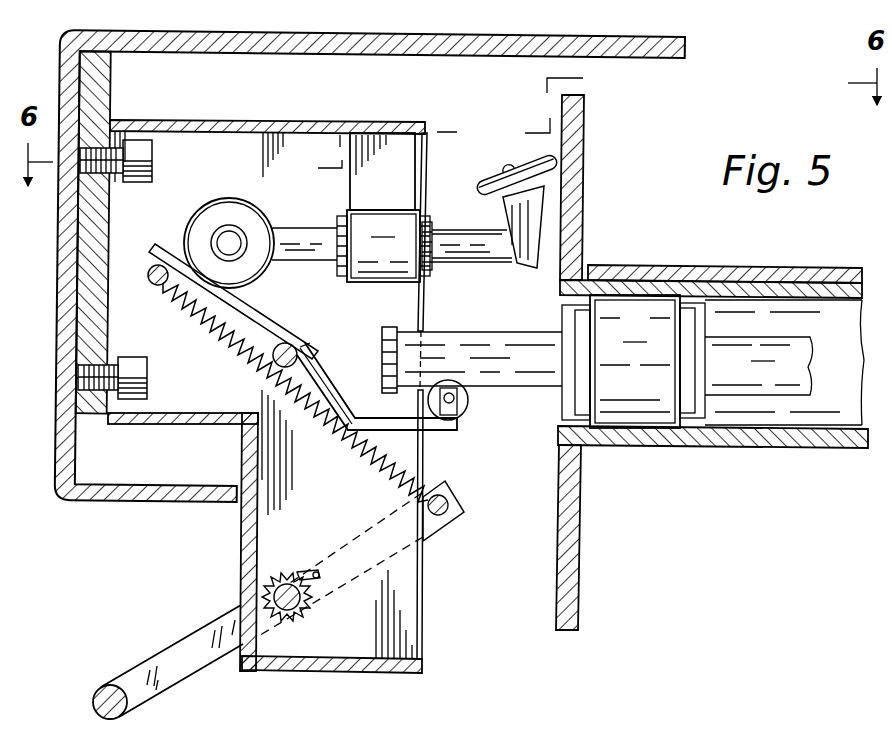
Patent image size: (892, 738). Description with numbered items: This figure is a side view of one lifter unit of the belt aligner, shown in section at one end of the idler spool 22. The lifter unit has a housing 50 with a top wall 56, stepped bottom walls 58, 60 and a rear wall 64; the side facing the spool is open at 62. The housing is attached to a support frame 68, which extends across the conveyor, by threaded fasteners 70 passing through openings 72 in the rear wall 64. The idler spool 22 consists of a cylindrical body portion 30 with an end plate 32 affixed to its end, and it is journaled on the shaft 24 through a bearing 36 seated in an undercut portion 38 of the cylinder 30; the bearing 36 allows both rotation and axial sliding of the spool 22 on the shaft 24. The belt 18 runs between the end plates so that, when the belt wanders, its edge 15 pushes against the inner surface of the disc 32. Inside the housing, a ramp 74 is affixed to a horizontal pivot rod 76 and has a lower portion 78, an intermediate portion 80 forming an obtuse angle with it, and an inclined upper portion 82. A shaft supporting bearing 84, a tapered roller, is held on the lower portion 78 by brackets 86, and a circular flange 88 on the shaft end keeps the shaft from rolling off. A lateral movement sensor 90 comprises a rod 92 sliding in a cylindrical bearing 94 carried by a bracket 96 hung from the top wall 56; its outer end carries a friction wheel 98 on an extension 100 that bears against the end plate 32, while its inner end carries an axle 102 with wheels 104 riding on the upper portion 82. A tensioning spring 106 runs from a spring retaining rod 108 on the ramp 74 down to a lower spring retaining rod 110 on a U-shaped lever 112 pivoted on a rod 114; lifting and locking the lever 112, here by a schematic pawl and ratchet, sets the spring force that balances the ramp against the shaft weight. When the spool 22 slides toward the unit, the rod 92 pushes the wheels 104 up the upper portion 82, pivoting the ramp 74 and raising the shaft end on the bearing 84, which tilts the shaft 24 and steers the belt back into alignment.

The support frame 68 is at (305, 30).
The rear wall 64 is at (105, 196).
The top wall 56 is at (275, 120).
The stepped bottom wall 58 is at (187, 424).
The stepped bottom wall 60 is at (338, 672).
The housing opening 62 is at (422, 600).
The threaded fastener 70 is at (153, 165).
The opening 72 is at (128, 180).
The housing 50 is at (303, 184).
The wheel 104 is at (229, 200).
The axle 102 is at (218, 242).
The bracket 96 is at (383, 207).
The cylindrical bearing 94 is at (431, 270).
The lateral movement sensor 90 is at (445, 230).
The rod 92 is at (482, 262).
The extension 100 is at (506, 204).
The wheel 98 is at (492, 180).
The idler spool 22 is at (605, 180).
The belt 18 is at (687, 264).
The undercut portion 38 is at (636, 292).
The belt edge 15 is at (592, 258).
The end plate 32 is at (582, 537).
The cylindrical body portion 30 is at (815, 282).
The bearing 36 is at (633, 361).
The shaft 24 is at (759, 366).
The circular flange 88 is at (383, 357).
The bracket 86 is at (438, 403).
The shaft supporting bearing 84 is at (468, 437).
The lower portion 78 is at (448, 432).
The intermediate portion 80 is at (334, 388).
The rod 76 is at (298, 348).
The ramp 74 is at (299, 330).
The upper portion 82 is at (258, 319).
The spring retaining rod 108 is at (158, 287).
The tensioning spring 106 is at (226, 348).
The lower spring retaining rod 110 is at (440, 520).
The rod 114 is at (302, 608).
The lever 112 is at (202, 690).